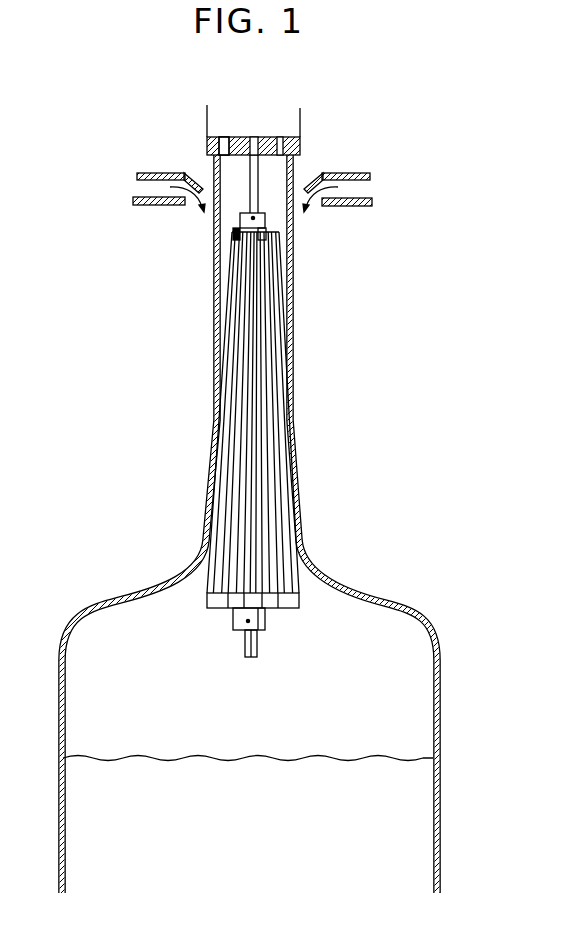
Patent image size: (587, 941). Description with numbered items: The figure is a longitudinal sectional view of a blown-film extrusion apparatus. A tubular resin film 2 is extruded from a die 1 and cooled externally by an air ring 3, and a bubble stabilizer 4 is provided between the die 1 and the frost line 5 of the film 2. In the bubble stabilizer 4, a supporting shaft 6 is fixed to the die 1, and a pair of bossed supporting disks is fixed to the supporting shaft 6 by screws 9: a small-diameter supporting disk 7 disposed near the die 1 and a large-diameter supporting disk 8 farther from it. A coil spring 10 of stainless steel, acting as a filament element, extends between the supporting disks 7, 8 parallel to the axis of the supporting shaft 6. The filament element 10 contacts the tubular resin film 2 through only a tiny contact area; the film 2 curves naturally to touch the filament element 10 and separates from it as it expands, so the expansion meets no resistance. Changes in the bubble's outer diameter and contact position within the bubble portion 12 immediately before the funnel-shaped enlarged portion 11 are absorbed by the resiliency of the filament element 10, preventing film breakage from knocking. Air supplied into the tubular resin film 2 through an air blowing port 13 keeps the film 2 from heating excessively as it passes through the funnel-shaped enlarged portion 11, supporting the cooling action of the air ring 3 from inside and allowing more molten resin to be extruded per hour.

The die 1 is at (298, 126).
The tubular resin film 2 is at (295, 316).
The air ring 3 is at (343, 173).
The bubble stabilizer 4 is at (212, 375).
The frost line 5 is at (315, 758).
The supporting shaft 6 is at (250, 168).
The small-diameter supporting disk 7 is at (235, 238).
The large-diameter supporting disk 8 is at (283, 600).
The screws 9 is at (254, 219).
The coil spring 10 is at (270, 397).
The funnel-shaped enlarged portion 11 is at (122, 598).
The bubble portion 12 is at (205, 484).
The air blowing port 13 is at (227, 137).